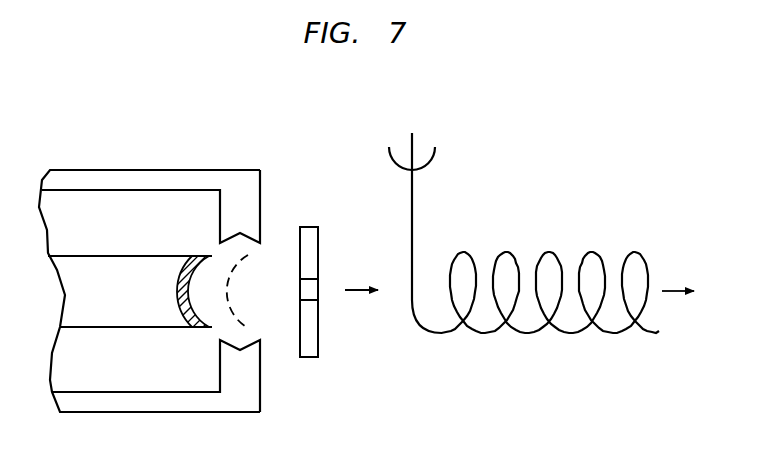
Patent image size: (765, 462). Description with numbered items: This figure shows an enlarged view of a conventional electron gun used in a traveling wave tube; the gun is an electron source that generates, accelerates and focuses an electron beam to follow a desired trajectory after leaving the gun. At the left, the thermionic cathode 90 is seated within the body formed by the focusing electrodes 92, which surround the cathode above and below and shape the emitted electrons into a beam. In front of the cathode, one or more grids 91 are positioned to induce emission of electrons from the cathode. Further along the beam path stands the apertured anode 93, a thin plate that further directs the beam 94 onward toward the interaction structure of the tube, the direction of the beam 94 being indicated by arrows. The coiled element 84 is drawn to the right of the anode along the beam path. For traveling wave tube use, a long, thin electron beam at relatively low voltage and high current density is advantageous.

The spring wire with hook 84 is at (419, 138).
The thermionic cathode 90 is at (183, 323).
The grid 91 is at (238, 311).
The focusing electrodes 92 is at (261, 180).
The apertured anode 93 is at (318, 241).
The electron beam 94 is at (360, 286).